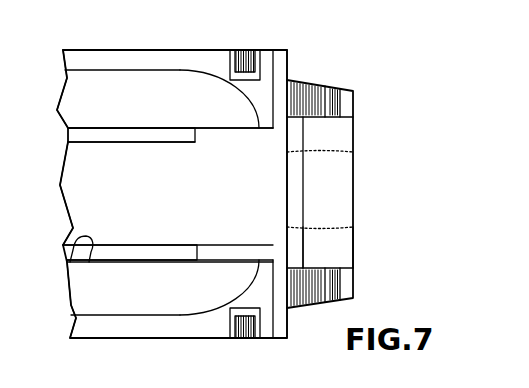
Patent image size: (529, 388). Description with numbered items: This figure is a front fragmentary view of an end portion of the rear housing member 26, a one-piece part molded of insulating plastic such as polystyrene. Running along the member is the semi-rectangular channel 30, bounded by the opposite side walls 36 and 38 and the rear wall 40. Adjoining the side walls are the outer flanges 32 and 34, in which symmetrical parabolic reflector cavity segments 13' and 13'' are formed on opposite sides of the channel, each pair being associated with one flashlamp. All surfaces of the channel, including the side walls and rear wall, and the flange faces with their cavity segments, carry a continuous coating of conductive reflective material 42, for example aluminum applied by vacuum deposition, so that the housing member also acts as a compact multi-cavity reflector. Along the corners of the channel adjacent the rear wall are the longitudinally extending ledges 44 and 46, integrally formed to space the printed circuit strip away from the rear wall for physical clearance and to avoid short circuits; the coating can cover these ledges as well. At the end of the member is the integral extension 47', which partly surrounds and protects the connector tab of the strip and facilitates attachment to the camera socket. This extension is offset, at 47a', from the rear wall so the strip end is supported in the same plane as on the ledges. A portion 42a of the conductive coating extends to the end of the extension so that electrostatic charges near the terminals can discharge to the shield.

The parabolic reflector cavity segment 13' is at (165, 73).
The parabolic reflector cavity segment 13'' is at (170, 312).
The rear housing member 26 is at (187, 47).
The channel 30 is at (93, 200).
The outer flange 32 is at (283, 63).
The outer flange 34 is at (302, 345).
The side wall 36 is at (216, 130).
The side wall 38 is at (70, 250).
The rear wall 40 is at (72, 168).
The conductive reflective material coating 42 is at (238, 225).
The coating extension 42a is at (342, 185).
The ledge 44 is at (176, 138).
The ledge 46 is at (144, 256).
The integral extension 47' is at (331, 178).
The offset 47a' is at (355, 247).